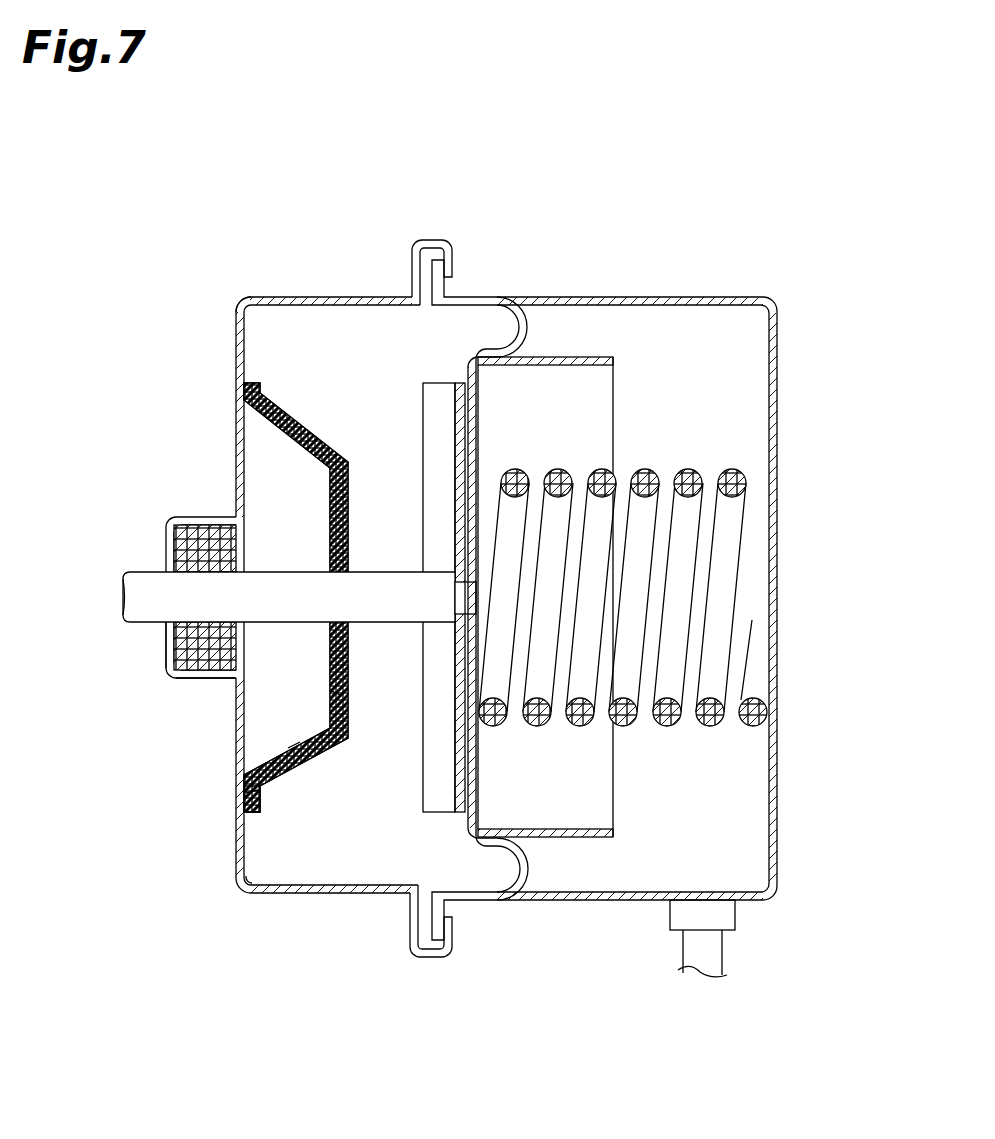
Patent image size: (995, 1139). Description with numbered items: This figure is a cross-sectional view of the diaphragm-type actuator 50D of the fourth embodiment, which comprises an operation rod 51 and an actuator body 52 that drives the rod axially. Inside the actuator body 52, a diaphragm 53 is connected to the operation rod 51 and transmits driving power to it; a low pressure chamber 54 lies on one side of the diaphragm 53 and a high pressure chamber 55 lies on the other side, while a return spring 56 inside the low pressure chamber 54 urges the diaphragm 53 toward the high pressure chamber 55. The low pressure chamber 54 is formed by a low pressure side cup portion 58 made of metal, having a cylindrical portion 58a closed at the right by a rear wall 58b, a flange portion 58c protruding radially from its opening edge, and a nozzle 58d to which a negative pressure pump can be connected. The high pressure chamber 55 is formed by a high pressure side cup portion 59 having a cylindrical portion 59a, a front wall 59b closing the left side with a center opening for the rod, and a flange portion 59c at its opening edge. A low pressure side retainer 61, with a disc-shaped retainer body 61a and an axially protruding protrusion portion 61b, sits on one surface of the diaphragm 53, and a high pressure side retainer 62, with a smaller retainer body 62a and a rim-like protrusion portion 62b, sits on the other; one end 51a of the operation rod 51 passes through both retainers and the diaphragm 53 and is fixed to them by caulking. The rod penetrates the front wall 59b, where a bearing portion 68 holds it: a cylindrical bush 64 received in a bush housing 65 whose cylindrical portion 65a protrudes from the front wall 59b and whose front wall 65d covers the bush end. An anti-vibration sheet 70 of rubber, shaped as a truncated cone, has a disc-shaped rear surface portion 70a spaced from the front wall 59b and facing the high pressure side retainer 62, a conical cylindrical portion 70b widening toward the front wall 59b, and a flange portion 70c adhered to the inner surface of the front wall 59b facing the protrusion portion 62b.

The diaphragm-type actuator 50D is at (192, 157).
The operation rod 51 is at (150, 583).
The one end of the operation rod 51a is at (474, 598).
The actuator body 52 is at (502, 197).
The diaphragm 53 is at (445, 393).
The low pressure chamber 54 is at (745, 760).
The high pressure chamber 55 is at (298, 870).
The return spring 56 is at (733, 513).
The low pressure side cup portion 58 is at (504, 295).
The cylindrical portion 58a is at (590, 902).
The rear wall 58b is at (778, 830).
The flange portion 58c is at (446, 952).
The nozzle 58d is at (708, 956).
The high pressure side cup portion 59 is at (370, 295).
The cylindrical portion 59a is at (348, 895).
The front wall 59b is at (236, 840).
The flange portion 59c is at (426, 958).
The low pressure side retainer 61 is at (648, 237).
The retainer body 61a is at (512, 364).
The protrusion portion 61b is at (600, 356).
The high pressure side retainer 62 is at (335, 237).
The retainer body 62a is at (352, 440).
The protrusion portion 62b is at (453, 395).
The bush 64 is at (215, 545).
The bush housing 65 is at (178, 517).
The cylindrical portion 65a is at (200, 679).
The front wall 65d is at (163, 650).
The bearing portion 68 is at (203, 460).
The anti-vibration sheet 70 is at (132, 750).
The rear surface portion 70a is at (330, 692).
The cylindrical portion 70b is at (290, 748).
The flange portion 70c is at (248, 792).